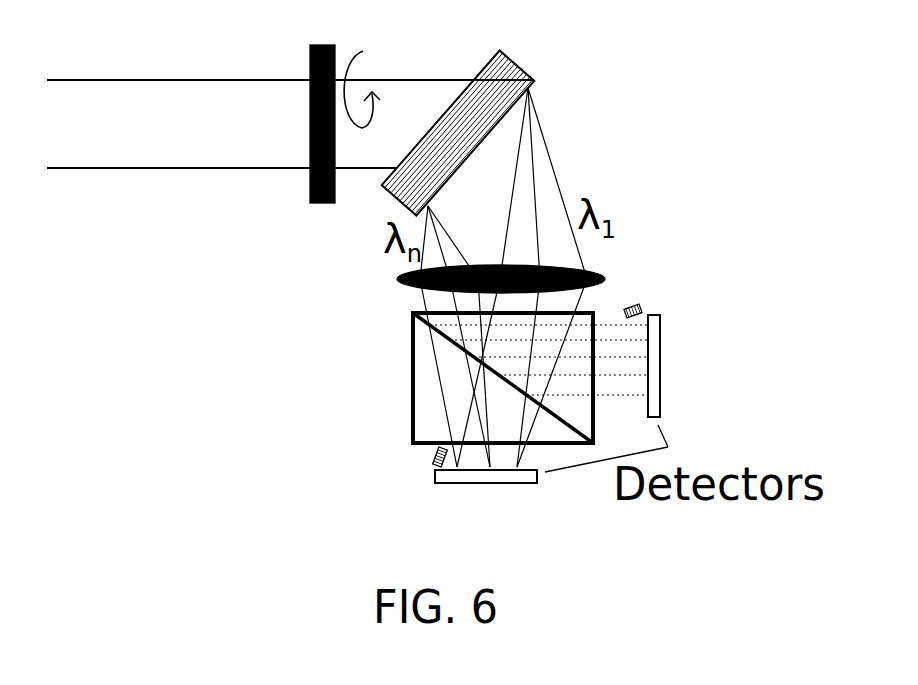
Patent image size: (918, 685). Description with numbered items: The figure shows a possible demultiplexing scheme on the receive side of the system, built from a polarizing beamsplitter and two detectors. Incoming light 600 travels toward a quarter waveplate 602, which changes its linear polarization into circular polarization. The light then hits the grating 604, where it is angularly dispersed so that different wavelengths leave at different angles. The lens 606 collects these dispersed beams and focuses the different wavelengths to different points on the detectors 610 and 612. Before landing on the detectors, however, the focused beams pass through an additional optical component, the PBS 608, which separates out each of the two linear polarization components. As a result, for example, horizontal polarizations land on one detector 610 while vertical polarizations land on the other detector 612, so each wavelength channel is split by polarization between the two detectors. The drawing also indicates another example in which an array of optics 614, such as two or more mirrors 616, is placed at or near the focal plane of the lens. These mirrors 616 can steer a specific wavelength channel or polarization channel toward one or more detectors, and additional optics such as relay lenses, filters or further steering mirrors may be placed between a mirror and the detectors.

The incoming light 600 is at (290, 124).
The quarter waveplate 602 is at (259, 146).
The grating 604 is at (503, 107).
The lens 606 is at (612, 283).
The polarizing beam splitter (PBS) 608 is at (482, 385).
The detector 610 is at (700, 366).
The detector 612 is at (486, 504).
The array of optics 614 is at (306, 464).
The mirrors 616 is at (642, 310).